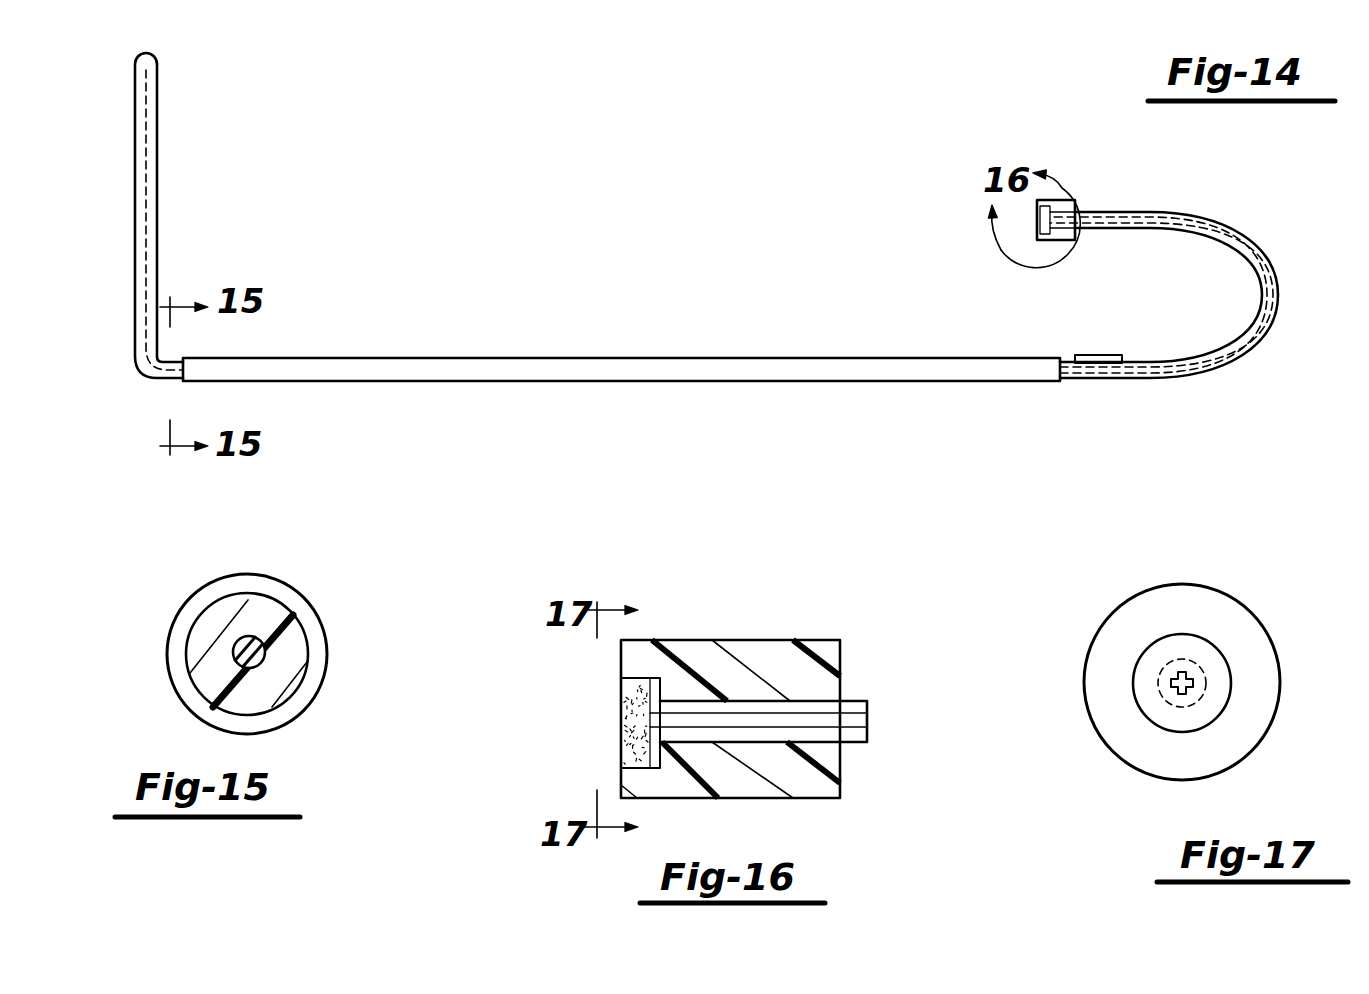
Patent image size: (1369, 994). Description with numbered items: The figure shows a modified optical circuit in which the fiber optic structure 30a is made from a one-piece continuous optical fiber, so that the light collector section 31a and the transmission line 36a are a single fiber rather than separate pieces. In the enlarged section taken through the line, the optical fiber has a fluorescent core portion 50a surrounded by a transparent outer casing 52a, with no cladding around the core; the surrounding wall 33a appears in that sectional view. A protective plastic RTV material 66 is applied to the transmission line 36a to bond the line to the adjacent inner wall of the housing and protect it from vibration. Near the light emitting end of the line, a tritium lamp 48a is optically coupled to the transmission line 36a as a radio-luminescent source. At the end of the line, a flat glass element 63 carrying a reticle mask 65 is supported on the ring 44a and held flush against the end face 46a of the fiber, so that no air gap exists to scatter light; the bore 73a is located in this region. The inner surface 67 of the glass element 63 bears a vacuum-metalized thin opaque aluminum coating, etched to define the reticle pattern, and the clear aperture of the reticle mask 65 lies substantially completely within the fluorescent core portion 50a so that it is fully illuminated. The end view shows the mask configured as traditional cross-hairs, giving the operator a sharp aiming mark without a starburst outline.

In FIG. 14, the fiber optic structure 30a is at (172, 126).
In FIG. 14, the light collector section 31a is at (158, 197).
In FIG. 14, the fluorescent core portion 50a is at (150, 278).
In FIG. 15, the fluorescent core portion 50a is at (243, 638).
In FIG. 16, the fluorescent core portion 50a is at (862, 722).
In FIG. 17, the fluorescent core portion 50a is at (1187, 697).
In FIG. 14, the protective plastic RTV material 66 is at (303, 358).
In FIG. 15, the protective plastic RTV material 66 is at (288, 598).
In FIG. 14, the transmission line 36a is at (171, 380).
In FIG. 16, the transmission line 36a is at (812, 705).
In FIG. 14, the tritium lamp 48a is at (1106, 347).
In FIG. 14, the ring 44a is at (1050, 214).
In FIG. 16, the ring 44a is at (842, 656).
In FIG. 17, the ring 44a is at (1212, 608).
In FIG. 14, the end face 46a is at (1040, 236).
In FIG. 14, the bore 73a is at (1050, 240).
In FIG. 16, the bore 73a is at (668, 690).
In FIG. 15, the transparent outer casing 52a is at (208, 622).
In FIG. 15, the inner wall 33a is at (280, 715).
In FIG. 16, the inner surface 67 is at (663, 693).
In FIG. 16, the flat glass element 63 is at (625, 697).
In FIG. 17, the flat glass element 63 is at (1218, 692).
In FIG. 16, the reticle mask 65 is at (637, 723).
In FIG. 17, the reticle mask 65 is at (1188, 679).